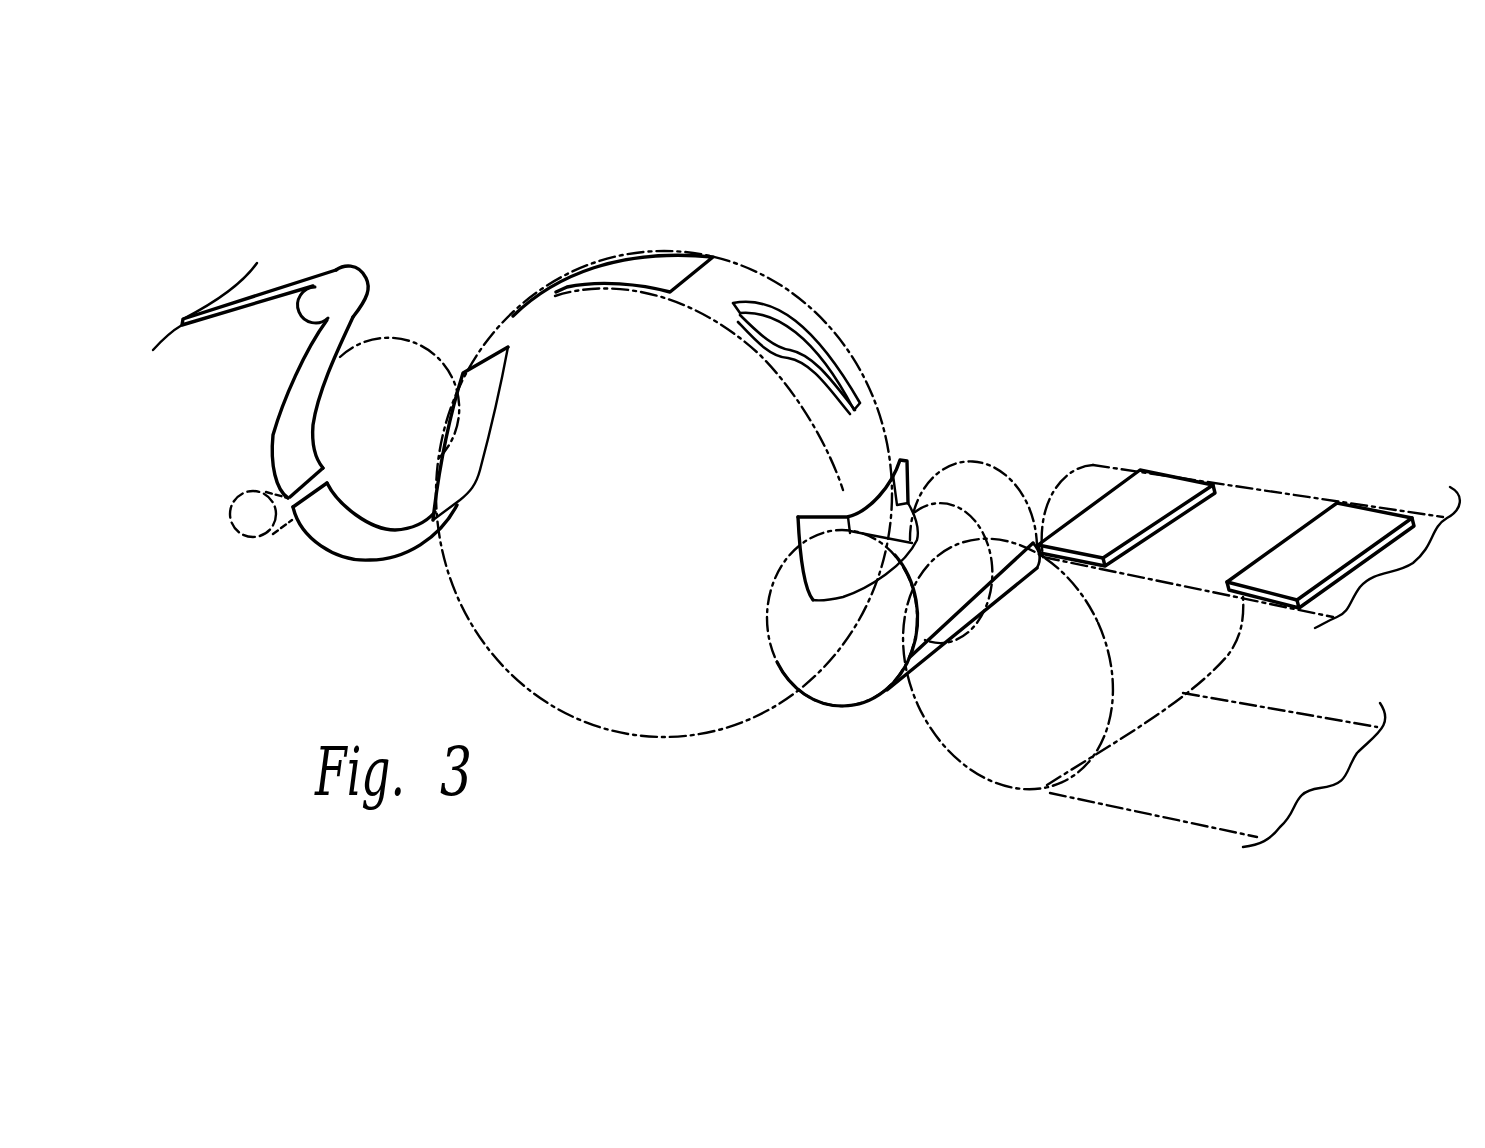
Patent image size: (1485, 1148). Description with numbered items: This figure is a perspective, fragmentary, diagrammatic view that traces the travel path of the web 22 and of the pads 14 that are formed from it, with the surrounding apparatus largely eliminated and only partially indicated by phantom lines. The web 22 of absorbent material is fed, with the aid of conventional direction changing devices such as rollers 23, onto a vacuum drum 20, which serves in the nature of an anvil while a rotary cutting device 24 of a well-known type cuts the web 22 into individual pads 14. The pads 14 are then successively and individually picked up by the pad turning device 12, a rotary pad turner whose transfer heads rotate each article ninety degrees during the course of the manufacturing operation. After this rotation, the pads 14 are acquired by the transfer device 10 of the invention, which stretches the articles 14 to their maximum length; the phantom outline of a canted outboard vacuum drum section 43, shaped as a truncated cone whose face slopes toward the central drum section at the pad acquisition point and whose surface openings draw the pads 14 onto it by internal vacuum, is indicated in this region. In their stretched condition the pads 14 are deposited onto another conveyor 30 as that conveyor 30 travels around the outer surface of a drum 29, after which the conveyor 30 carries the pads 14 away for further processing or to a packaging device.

The transfer device 10 is at (1036, 428).
The pad turning device 12 is at (750, 728).
The articles 14 is at (342, 533).
The vacuum drum 20 is at (407, 361).
The web 22 is at (281, 277).
The rollers 23 is at (308, 318).
The rotary cutting device 24 is at (268, 486).
The drum 29 is at (983, 752).
The conveyor 30 is at (1245, 497).
The outboard vacuum drum section 43 is at (840, 693).